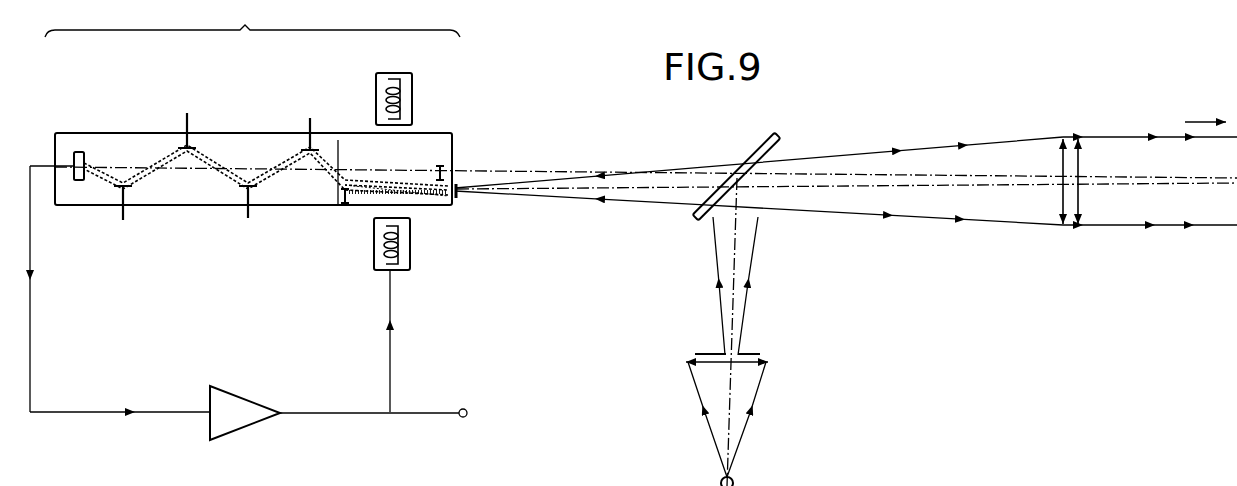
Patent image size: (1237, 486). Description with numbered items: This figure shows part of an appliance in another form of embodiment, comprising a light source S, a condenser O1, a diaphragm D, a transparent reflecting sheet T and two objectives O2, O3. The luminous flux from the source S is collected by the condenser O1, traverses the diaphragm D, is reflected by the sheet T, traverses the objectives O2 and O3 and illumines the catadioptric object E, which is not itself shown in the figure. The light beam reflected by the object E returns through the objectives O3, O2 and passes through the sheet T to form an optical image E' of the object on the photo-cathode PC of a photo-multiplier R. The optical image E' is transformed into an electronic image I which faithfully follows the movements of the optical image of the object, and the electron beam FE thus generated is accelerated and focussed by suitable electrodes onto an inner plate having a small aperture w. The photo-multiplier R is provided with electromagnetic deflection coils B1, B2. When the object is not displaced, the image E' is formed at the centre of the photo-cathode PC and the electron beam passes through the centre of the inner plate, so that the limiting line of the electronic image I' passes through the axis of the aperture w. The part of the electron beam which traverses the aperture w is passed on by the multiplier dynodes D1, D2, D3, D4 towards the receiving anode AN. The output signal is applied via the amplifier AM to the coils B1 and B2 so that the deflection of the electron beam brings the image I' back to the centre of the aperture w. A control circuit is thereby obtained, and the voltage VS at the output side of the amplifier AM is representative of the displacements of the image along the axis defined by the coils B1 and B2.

The photo-multiplier R is at (252, 20).
The photo-cathode PC is at (452, 144).
The receiving anode AN is at (79, 152).
The multiplier dynode D1 is at (314, 122).
The multiplier dynode D2 is at (253, 218).
The multiplier dynode D3 is at (191, 119).
The multiplier dynode D4 is at (127, 218).
The aperture w is at (339, 166).
The electronic image I' is at (346, 192).
The electronic image I is at (440, 173).
The electron beam FE is at (412, 185).
The optical image E' is at (467, 204).
The electromagnetic deflection coil B2 is at (413, 90).
The electromagnetic deflection coil B1 is at (410, 244).
The amplifier AM is at (258, 385).
The voltage at the output side of the amplifier VS is at (476, 408).
The transparent reflecting sheet T is at (765, 143).
The diaphragm D is at (764, 354).
The condenser O1 is at (757, 364).
The light source S is at (727, 424).
The objective O2 is at (1060, 216).
The objective O3 is at (1081, 216).
The catadioptric object E is at (1205, 108).